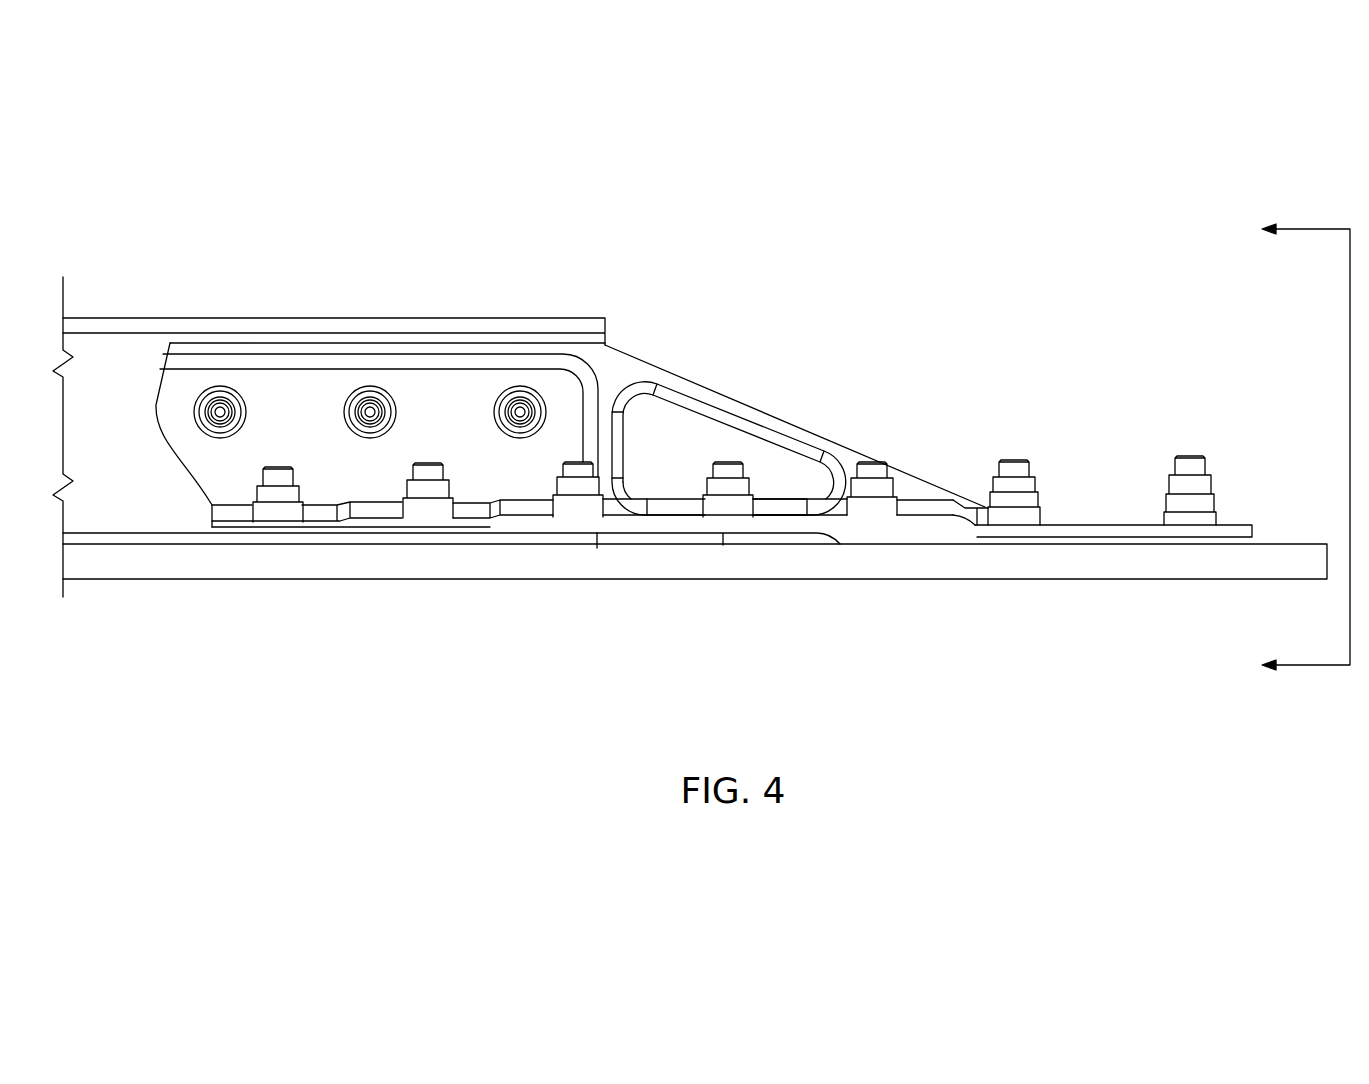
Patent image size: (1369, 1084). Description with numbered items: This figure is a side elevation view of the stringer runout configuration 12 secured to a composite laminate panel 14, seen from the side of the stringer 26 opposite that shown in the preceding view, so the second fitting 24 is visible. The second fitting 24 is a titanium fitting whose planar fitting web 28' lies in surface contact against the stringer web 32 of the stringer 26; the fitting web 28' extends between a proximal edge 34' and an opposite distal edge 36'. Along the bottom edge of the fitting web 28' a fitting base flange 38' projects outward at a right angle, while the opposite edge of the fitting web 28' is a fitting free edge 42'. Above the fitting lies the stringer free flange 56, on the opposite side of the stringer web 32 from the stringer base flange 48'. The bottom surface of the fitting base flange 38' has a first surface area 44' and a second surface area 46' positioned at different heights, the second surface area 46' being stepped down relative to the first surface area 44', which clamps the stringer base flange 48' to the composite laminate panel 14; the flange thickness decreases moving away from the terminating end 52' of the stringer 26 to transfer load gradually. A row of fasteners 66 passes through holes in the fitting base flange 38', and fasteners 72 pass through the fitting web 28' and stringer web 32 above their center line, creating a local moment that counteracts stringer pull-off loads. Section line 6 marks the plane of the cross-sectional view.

The section line 6- 6 is at (1306, 451).
The stringer runout configuration 12 is at (767, 296).
The composite laminate panel 14 is at (1304, 541).
The second fitting 24 is at (199, 348).
The stringer 26 is at (107, 317).
The fitting web 28' is at (440, 316).
The stringer web 32 is at (132, 372).
The proximal edge 34' is at (139, 457).
The distal edge 36' is at (796, 435).
The fitting base flange 38' is at (351, 492).
The fitting free edge 42' is at (387, 298).
The first surface area 44' is at (364, 577).
The second surface area 46' is at (1107, 573).
The stringer base flange 48' is at (703, 491).
The terminating end 52' is at (751, 577).
The stringer free flange 56 is at (507, 317).
The fasteners 66 is at (280, 466).
The fasteners 72 is at (220, 385).